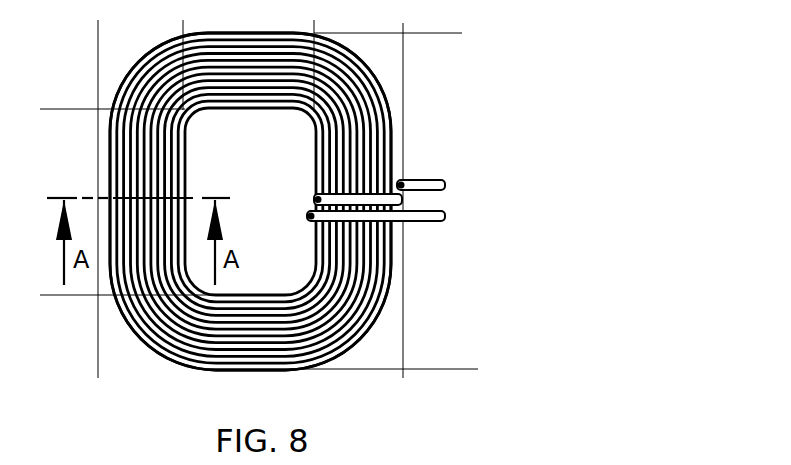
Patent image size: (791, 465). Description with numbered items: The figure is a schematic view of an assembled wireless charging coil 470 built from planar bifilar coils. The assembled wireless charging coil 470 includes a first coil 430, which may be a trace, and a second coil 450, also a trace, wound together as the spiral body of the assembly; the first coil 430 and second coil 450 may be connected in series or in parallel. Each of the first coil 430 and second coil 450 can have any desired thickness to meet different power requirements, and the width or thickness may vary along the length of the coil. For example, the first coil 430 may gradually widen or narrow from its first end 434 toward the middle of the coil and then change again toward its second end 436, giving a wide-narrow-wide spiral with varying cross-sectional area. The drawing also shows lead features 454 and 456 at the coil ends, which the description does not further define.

The wireless charging coil 470 is at (372, 192).
The second coil 450 is at (287, 201).
The first coil 430 is at (308, 201).
The first end 434 is at (325, 165).
The second end 436 is at (445, 170).
The second lead end 454 is at (266, 188).
The second lead tab 456 is at (431, 215).